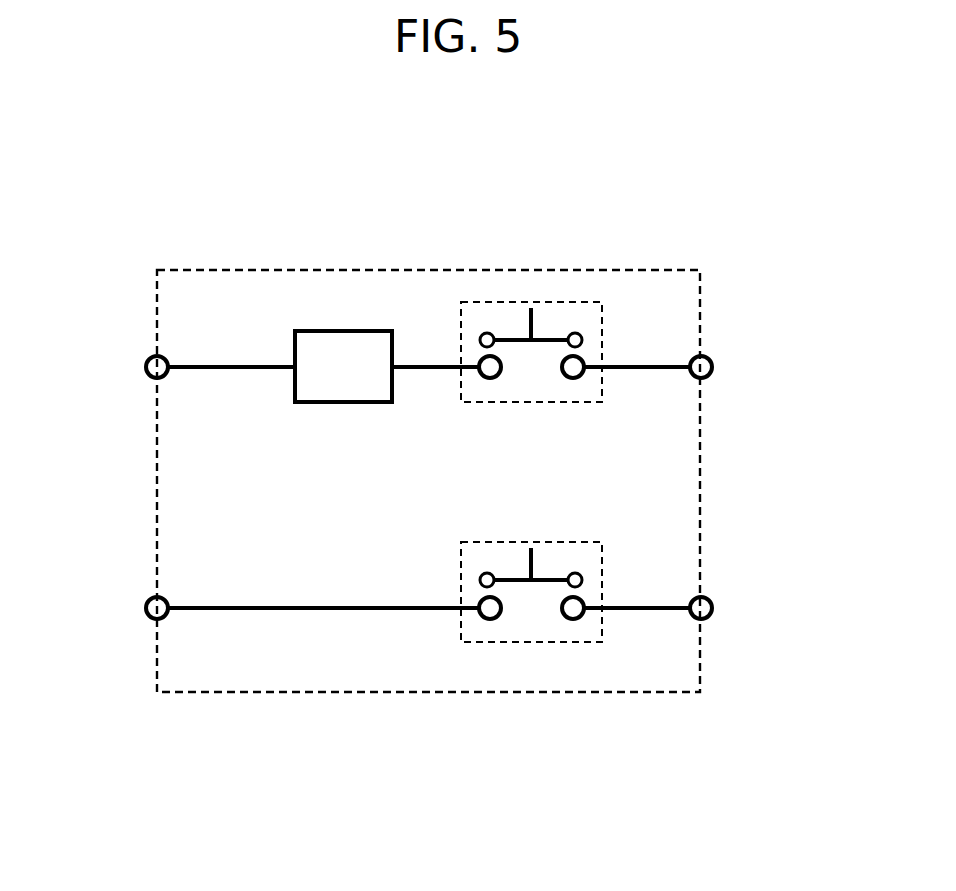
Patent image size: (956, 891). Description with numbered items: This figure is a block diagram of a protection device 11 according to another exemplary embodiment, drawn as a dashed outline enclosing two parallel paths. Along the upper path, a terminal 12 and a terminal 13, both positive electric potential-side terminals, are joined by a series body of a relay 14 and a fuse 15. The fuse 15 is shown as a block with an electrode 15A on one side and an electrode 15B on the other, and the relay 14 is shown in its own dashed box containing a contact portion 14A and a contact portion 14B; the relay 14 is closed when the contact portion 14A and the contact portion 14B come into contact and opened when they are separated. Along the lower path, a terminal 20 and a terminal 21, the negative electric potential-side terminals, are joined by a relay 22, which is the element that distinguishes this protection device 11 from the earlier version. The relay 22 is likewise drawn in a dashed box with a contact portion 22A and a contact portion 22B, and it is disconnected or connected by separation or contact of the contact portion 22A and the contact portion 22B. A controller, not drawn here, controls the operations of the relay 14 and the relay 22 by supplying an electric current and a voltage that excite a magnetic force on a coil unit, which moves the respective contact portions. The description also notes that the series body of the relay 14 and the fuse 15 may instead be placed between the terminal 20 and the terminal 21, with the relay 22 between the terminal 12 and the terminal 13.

The protection device 11 is at (668, 270).
The terminal 12 is at (152, 356).
The terminal 13 is at (708, 356).
The relay 14 is at (553, 329).
The contact portion 14A is at (580, 333).
The contact portion 14B is at (575, 378).
The fuse 15 is at (345, 331).
The electrode 15A is at (296, 372).
The electrode 15B is at (394, 345).
The terminal 20 is at (152, 597).
The terminal 21 is at (708, 597).
The relay 22 is at (532, 618).
The contact portion 22A is at (580, 572).
The contact portion 22B is at (576, 620).